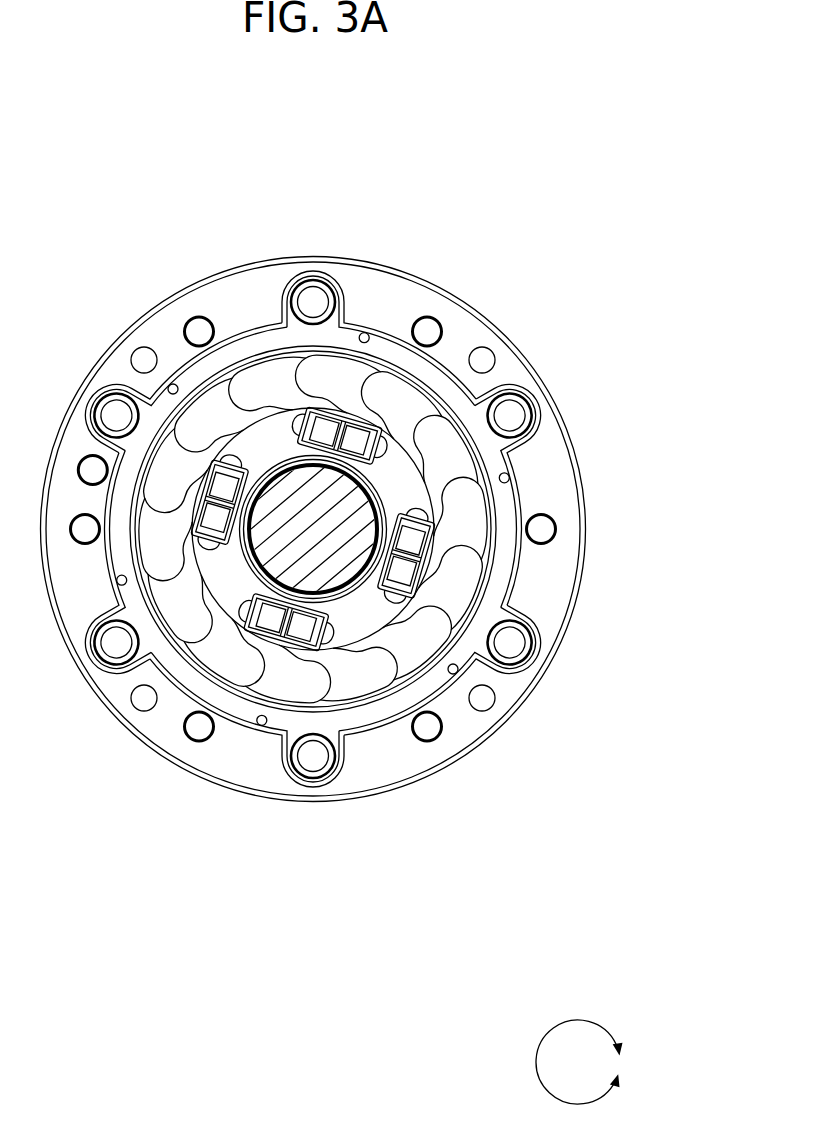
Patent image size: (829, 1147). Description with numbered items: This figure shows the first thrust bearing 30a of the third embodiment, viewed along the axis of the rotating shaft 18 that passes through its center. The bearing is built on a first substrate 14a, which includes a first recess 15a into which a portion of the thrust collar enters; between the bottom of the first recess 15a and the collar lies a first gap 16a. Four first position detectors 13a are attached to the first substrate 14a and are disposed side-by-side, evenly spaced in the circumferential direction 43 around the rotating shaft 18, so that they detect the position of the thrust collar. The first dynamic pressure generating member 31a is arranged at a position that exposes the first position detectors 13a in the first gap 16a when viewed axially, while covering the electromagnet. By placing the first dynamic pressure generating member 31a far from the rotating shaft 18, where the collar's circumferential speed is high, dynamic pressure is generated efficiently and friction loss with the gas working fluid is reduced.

The first thrust bearing 30a is at (524, 254).
The first position detectors 13a is at (338, 392).
The first substrate 14a is at (553, 494).
The first recess 15a is at (497, 581).
The first gap 16a is at (350, 501).
The rotating shaft 18 is at (275, 551).
The first dynamic pressure generating member 31a is at (373, 376).
The circumferential direction 43 is at (578, 1020).